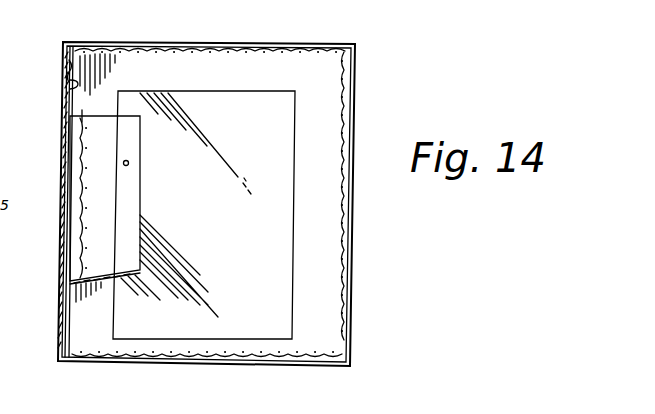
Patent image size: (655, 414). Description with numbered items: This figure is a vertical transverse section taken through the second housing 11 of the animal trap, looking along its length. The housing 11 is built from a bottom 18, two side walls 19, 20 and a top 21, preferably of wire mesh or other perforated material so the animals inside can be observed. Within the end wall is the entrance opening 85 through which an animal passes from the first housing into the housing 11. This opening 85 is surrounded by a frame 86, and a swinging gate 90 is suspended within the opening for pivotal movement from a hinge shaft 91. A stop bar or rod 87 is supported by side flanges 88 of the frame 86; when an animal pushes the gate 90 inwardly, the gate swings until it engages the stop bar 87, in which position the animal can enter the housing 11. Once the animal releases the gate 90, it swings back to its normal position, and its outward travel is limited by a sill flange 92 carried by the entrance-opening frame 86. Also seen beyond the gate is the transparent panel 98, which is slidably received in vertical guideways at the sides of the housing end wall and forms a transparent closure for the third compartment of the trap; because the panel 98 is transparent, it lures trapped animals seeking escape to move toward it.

The housing 11 is at (345, 69).
The bottom 18 is at (207, 360).
The side wall 19 is at (62, 72).
The side wall 20 is at (350, 134).
The top 21 is at (258, 44).
The entrance opening 85 is at (58, 132).
The frame 86 is at (68, 86).
The stop bar 87 is at (130, 163).
The side flanges 88 is at (128, 147).
The gate 90 is at (84, 210).
The hinge shaft 91 is at (81, 126).
The sill flange 92 is at (76, 272).
The transparent panel 98 is at (284, 250).